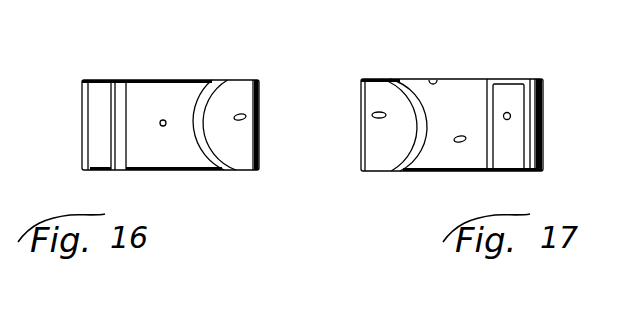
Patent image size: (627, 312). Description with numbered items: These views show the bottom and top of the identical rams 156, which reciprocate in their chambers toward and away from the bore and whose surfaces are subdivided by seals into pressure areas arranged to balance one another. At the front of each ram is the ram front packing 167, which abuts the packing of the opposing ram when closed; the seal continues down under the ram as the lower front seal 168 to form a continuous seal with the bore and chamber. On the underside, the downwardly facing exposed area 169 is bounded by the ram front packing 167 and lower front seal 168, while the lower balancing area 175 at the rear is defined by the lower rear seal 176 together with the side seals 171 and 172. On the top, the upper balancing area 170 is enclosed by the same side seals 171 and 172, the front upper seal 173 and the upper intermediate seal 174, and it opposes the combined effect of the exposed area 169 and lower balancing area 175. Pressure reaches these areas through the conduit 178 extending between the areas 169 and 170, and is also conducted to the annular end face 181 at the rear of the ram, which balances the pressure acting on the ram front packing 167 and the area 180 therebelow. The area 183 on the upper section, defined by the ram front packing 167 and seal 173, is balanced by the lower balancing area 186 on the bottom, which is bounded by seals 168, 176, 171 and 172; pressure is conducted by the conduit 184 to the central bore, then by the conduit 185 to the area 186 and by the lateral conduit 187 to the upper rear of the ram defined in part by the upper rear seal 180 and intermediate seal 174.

In FIG. 16, the ram 156 is at (220, 171).
In FIG. 17, the ram 156 is at (400, 171).
In FIG. 16, the ram front packing 167 is at (260, 138).
In FIG. 17, the ram front packing 167 is at (361, 139).
In FIG. 16, the lower front seal 168 is at (212, 160).
In FIG. 16, the exposed area 169 is at (240, 88).
In FIG. 17, the upper balancing area 170 is at (458, 95).
In FIG. 16, the side seal 171 is at (152, 170).
In FIG. 17, the side seal 171 is at (433, 79).
In FIG. 16, the side seal 172 is at (173, 80).
In FIG. 17, the side seal 172 is at (453, 172).
In FIG. 17, the front upper seal 173 is at (408, 80).
In FIG. 17, the upper intermediate seal 174 is at (489, 80).
In FIG. 16, the lower balancing area 175 is at (101, 86).
In FIG. 16, the lower rear seal 176 is at (115, 137).
In FIG. 16, the conduit 178 is at (245, 115).
In FIG. 17, the conduit 178 is at (458, 142).
In FIG. 17, the upper rear seal 180 is at (527, 80).
In FIG. 16, the annular end face 181 is at (82, 116).
In FIG. 17, the annular end face 181 is at (543, 112).
In FIG. 17, the exposed area 183 is at (380, 151).
In FIG. 17, the conduit 184 is at (379, 111).
In FIG. 16, the conduit 185 is at (161, 126).
In FIG. 16, the lower balancing area 186 is at (140, 95).
In FIG. 17, the lateral conduit 187 is at (510, 119).